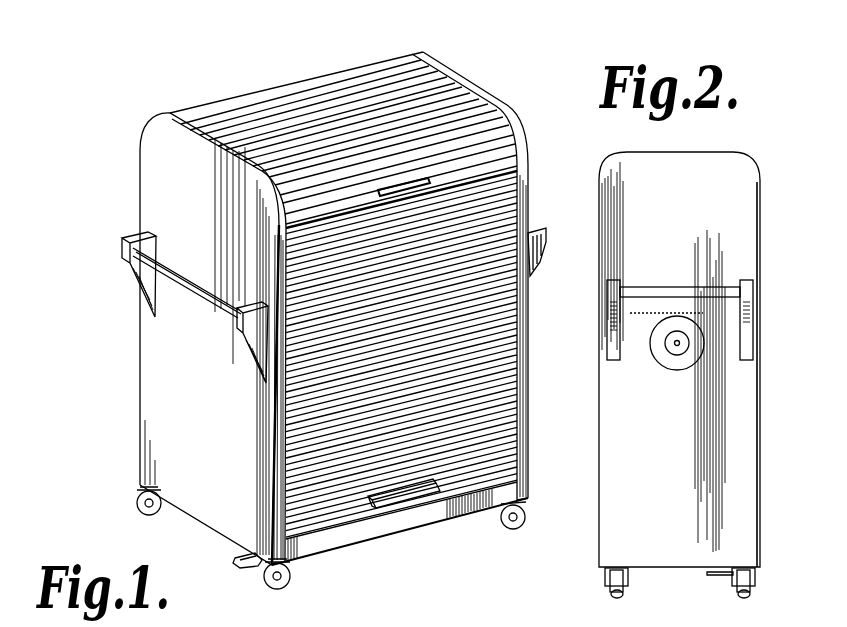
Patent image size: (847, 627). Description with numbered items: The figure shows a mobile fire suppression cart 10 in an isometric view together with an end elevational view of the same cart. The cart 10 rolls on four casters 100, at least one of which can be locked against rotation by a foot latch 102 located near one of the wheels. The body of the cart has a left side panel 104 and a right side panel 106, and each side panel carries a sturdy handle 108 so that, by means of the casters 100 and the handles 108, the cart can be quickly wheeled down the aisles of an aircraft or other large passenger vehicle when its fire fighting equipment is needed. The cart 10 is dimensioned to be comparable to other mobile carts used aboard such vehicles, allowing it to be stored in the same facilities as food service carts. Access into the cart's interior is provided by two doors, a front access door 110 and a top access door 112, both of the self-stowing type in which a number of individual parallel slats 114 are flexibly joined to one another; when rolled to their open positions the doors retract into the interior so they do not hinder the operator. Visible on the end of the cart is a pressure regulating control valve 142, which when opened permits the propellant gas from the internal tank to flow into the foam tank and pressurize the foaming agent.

In FIG. 1, the mobile fire suppression cart 10 is at (118, 414).
In FIG. 1, the casters 100 is at (293, 577).
In FIG. 2, the casters 100 is at (611, 593).
In FIG. 1, the foot latch 102 is at (233, 559).
In FIG. 1, the left side panel 104 is at (163, 377).
In FIG. 2, the right side panel 106 is at (615, 497).
In FIG. 1, the handle 108 is at (166, 257).
In FIG. 2, the handle 108 is at (641, 287).
In FIG. 1, the front access door 110 is at (487, 200).
In FIG. 1, the top access door 112 is at (272, 100).
In FIG. 1, the slats 114 is at (490, 137).
In FIG. 2, the pressure regulating control valve 142 is at (667, 350).